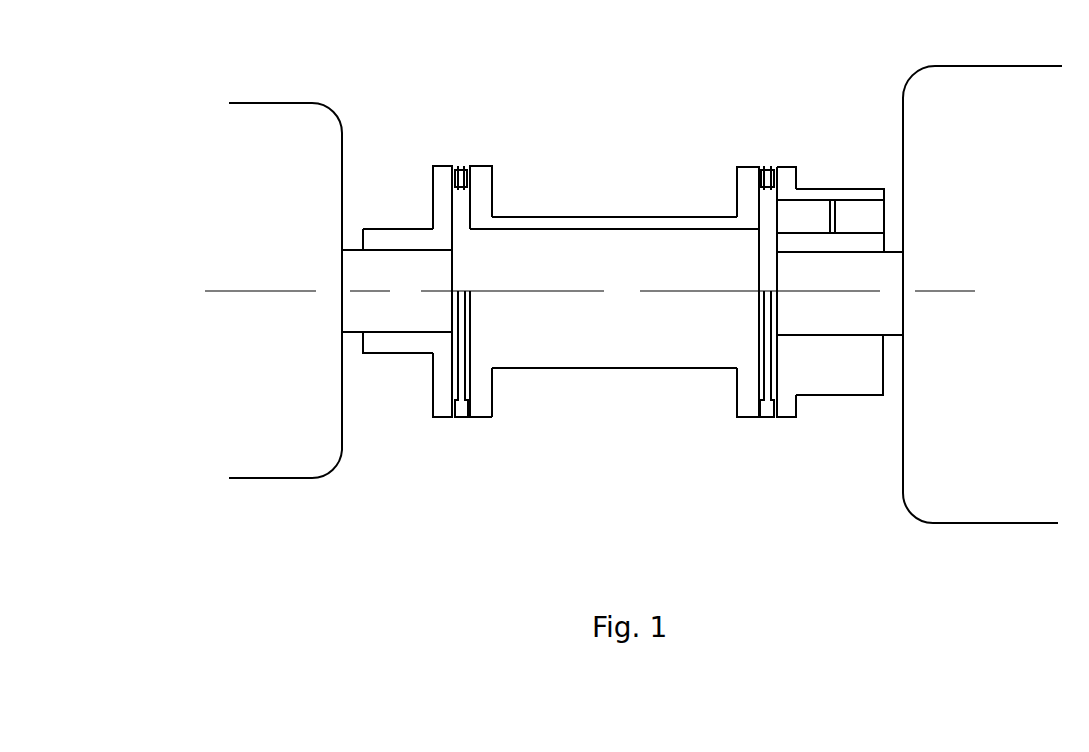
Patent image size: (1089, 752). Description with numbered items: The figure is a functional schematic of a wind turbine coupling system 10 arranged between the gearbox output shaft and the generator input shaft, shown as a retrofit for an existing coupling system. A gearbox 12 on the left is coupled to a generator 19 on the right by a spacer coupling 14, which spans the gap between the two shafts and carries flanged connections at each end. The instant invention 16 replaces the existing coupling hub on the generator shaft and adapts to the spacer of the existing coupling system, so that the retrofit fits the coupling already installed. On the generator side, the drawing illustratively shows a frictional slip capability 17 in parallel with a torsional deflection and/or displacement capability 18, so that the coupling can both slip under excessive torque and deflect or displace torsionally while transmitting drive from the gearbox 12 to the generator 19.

The wind turbine coupling system 10 is at (488, 138).
The gearbox 12 is at (312, 130).
The spacer coupling 14 is at (537, 400).
The instant invention 16 is at (818, 413).
The frictional slip capability 17 is at (856, 215).
The torsional deflection and/or displacement capability 18 is at (809, 215).
The generator 19 is at (933, 480).